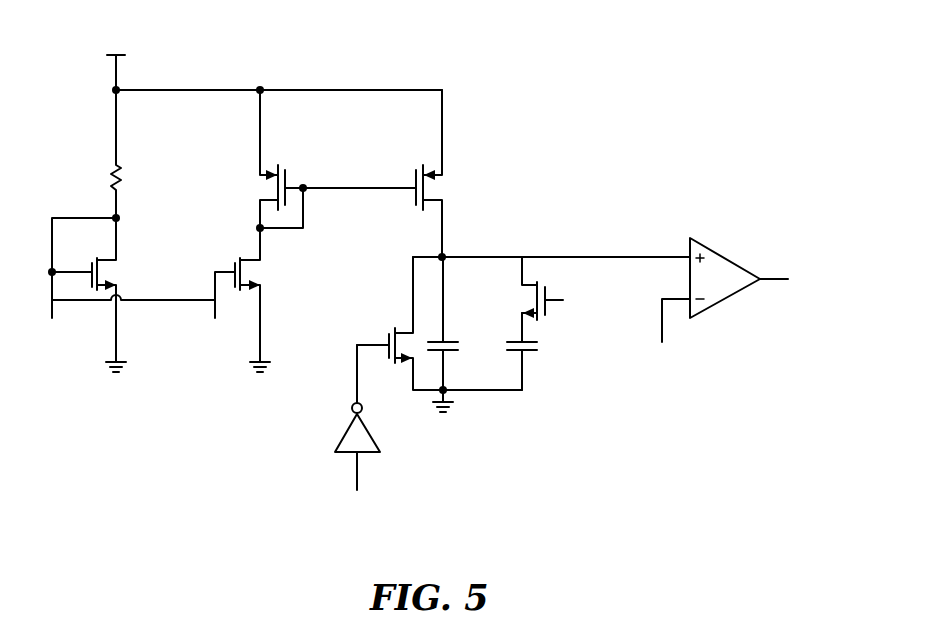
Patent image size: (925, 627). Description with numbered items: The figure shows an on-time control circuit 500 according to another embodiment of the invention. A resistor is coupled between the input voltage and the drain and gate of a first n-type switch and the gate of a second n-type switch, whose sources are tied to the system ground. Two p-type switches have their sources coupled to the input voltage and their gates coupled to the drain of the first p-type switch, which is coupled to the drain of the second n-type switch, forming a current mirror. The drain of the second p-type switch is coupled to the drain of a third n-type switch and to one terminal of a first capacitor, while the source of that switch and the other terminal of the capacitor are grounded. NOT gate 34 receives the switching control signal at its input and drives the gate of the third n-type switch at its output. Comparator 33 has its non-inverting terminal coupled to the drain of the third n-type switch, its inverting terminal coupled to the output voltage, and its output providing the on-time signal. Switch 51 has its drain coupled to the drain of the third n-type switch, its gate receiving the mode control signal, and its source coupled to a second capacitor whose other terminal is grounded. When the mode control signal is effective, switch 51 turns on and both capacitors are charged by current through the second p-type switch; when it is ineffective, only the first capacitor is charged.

The on-time control circuit 500 is at (662, 63).
The comparator 33 is at (715, 250).
The NOT gate 34 is at (372, 432).
The switch 51 is at (522, 299).